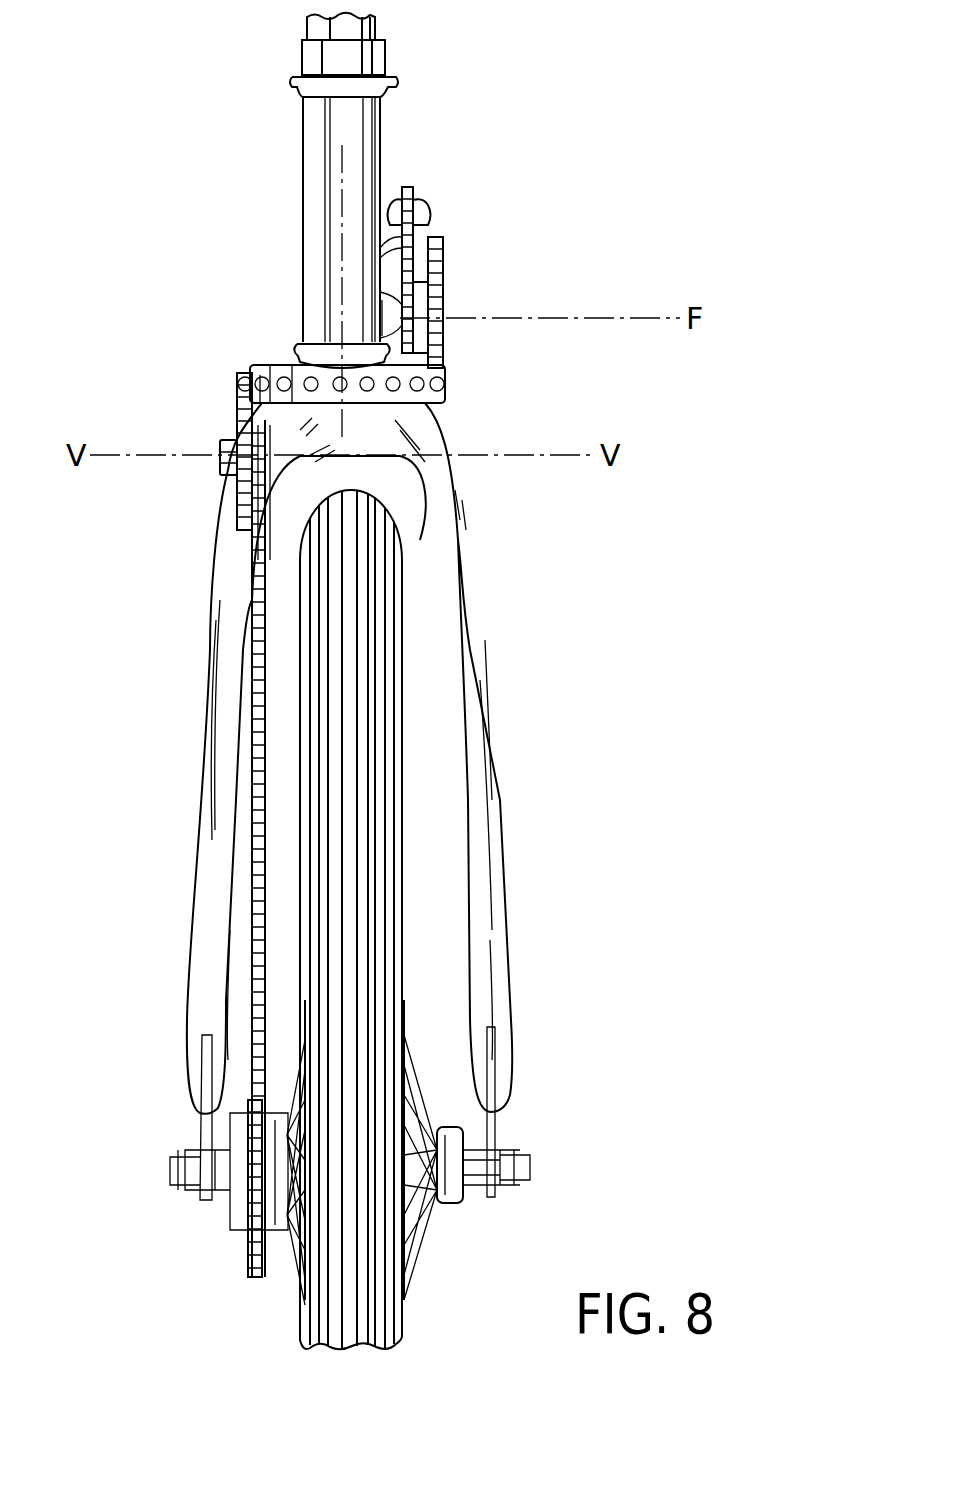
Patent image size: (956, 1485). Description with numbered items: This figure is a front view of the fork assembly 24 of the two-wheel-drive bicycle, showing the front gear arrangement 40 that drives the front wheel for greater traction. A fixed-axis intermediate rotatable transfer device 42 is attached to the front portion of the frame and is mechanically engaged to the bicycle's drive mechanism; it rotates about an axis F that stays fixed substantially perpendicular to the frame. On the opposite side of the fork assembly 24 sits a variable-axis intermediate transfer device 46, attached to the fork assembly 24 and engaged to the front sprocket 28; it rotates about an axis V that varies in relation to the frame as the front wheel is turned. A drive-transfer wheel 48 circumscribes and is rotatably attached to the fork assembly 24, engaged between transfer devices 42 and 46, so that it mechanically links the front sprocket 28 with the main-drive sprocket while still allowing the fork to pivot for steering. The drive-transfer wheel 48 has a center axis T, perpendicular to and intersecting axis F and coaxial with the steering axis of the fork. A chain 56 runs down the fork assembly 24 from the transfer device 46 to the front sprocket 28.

The center axis T is at (342, 168).
The fixed-axis intermediate rotatable transfer device 42 is at (457, 250).
The drive-transfer wheel 48 is at (278, 367).
The gear arrangement 40 is at (502, 392).
The variable-axis intermediate transfer device 46 is at (217, 487).
The fork assembly 24 is at (485, 672).
The drive chain 56 is at (250, 800).
The front sprocket 28 is at (237, 1218).